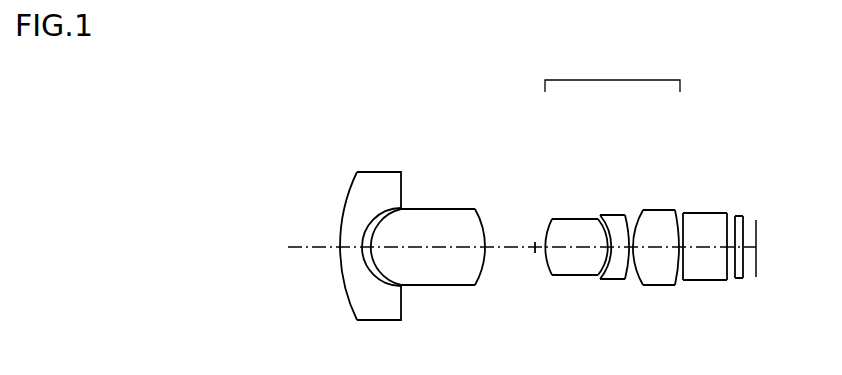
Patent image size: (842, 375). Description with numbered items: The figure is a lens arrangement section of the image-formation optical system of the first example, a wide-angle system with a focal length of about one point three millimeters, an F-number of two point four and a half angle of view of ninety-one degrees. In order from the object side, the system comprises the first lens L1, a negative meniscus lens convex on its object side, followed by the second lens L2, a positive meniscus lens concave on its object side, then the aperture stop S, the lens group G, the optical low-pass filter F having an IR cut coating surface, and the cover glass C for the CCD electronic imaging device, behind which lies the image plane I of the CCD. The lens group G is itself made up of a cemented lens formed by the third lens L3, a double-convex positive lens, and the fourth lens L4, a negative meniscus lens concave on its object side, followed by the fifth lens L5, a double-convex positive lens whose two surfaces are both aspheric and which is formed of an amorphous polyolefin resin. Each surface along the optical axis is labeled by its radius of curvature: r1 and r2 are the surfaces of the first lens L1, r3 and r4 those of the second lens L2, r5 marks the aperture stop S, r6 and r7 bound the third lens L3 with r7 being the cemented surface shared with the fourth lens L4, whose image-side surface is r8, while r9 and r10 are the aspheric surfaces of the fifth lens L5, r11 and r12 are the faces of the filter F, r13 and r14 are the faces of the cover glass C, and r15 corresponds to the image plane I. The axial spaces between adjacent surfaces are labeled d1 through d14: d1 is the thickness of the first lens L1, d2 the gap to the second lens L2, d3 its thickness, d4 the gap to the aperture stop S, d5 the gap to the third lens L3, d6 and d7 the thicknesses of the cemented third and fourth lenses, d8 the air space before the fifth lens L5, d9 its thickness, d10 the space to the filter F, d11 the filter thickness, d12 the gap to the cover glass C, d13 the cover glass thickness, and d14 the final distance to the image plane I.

The first lens L1 is at (364, 211).
The second lens L2 is at (428, 209).
The third lens L3 is at (573, 203).
The fourth lens L4 is at (618, 200).
The fifth lens L5 is at (668, 203).
The lens group G is at (612, 74).
The aperture stop S is at (523, 250).
The optical low-pass filter F is at (714, 250).
The cover glass C is at (769, 257).
The image plane I is at (760, 237).
The radius of curvature of first lens surface r1 is at (348, 197).
The radius of curvature of second lens surface r2 is at (381, 213).
The radius of curvature of third lens surface r3 is at (415, 215).
The radius of curvature of fourth lens surface r4 is at (482, 220).
The radius of curvature of fifth surface r5 is at (535, 229).
The radius of curvature of sixth lens surface r6 is at (547, 225).
The radius of curvature of seventh lens surface r7 is at (597, 217).
The radius of curvature of eighth lens surface r8 is at (620, 213).
The radius of curvature of ninth lens surface r9 is at (637, 213).
The radius of curvature of tenth lens surface r10 is at (672, 213).
The radius of curvature of eleventh surface r11 is at (686, 212).
The radius of curvature of twelfth surface r12 is at (728, 212).
The radius of curvature of thirteenth surface r13 is at (735, 213).
The radius of curvature of fourteenth surface r14 is at (751, 218).
The radius of curvature of fifteenth surface r15 is at (764, 220).
The space between first and second surfaces d1 is at (352, 258).
The space between second and third surfaces d2 is at (388, 263).
The space between third and fourth surfaces d3 is at (441, 263).
The space between fourth and fifth surfaces d4 is at (505, 266).
The space between fifth and sixth surfaces d5 is at (545, 255).
The space between sixth and seventh surfaces d6 is at (575, 265).
The space between seventh and eighth surfaces d7 is at (607, 280).
The space between eighth and ninth surfaces d8 is at (623, 272).
The space between ninth and tenth surfaces d9 is at (655, 265).
The space between tenth and eleventh surfaces d10 is at (678, 275).
The space between eleventh and twelfth surfaces d11 is at (704, 262).
The space between twelfth and thirteenth surfaces d12 is at (731, 280).
The space between thirteenth and fourteenth surfaces d13 is at (747, 280).
The space between fourteenth and fifteenth surfaces d14 is at (750, 278).